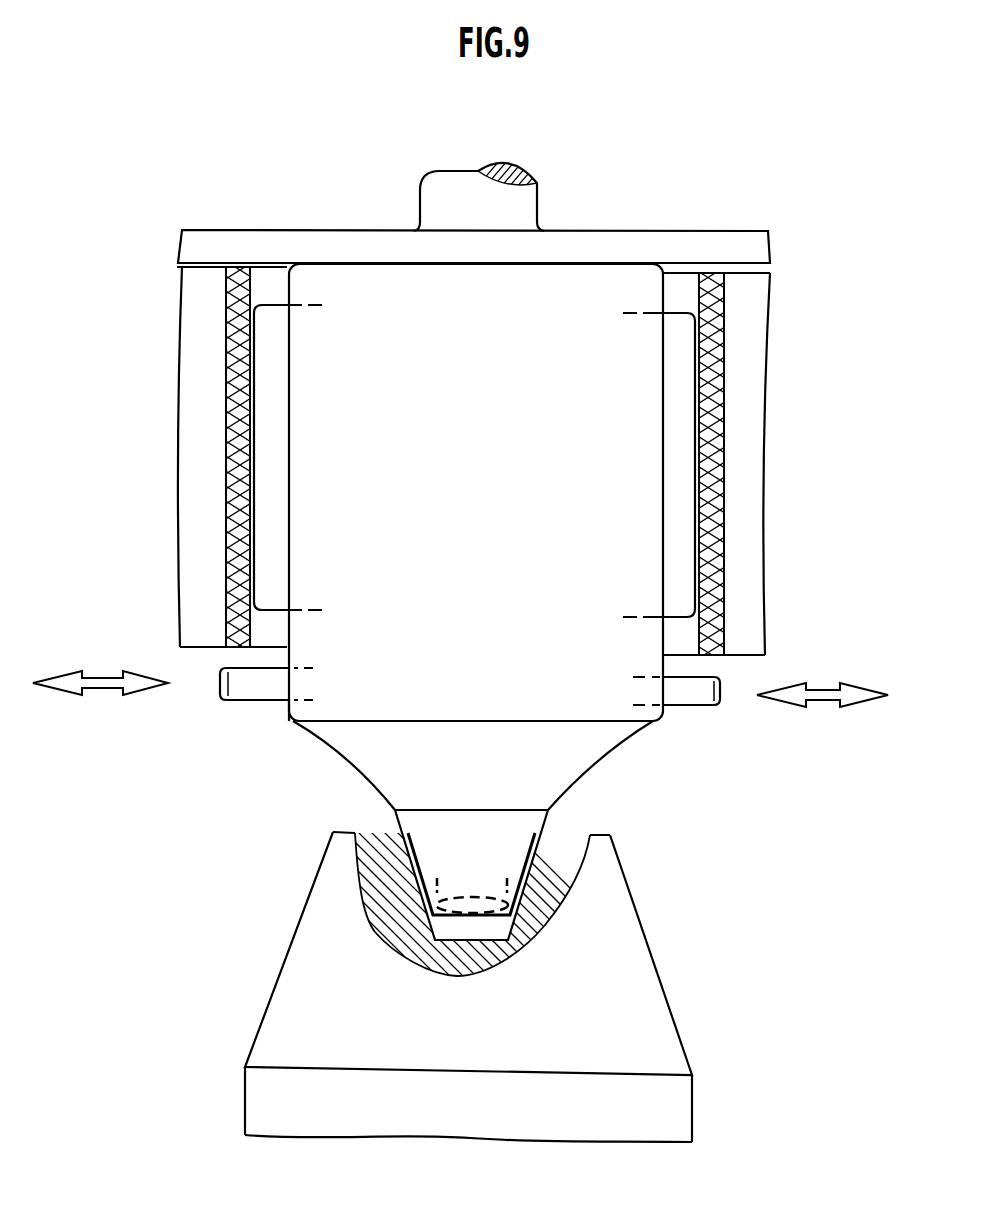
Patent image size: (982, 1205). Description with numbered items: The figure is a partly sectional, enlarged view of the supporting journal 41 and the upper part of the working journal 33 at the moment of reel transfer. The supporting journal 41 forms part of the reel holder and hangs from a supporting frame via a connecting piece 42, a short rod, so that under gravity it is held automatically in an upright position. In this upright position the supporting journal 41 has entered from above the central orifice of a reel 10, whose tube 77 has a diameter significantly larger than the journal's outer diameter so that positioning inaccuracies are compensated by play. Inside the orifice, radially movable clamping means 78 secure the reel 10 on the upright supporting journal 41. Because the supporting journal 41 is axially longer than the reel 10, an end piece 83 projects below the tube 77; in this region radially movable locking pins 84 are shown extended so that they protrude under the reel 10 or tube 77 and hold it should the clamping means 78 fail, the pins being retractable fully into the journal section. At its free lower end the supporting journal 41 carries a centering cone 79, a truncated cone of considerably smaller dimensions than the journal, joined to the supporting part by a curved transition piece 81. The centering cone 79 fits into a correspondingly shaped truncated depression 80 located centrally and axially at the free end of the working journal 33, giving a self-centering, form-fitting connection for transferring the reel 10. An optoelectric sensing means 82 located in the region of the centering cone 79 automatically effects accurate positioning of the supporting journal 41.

The reel 10 is at (178, 486).
The working journal 33 is at (690, 1038).
The supporting journal 41 is at (592, 297).
The connecting piece 42 is at (510, 212).
The tube 77 is at (727, 373).
The clamping means 78 is at (270, 325).
The centering cone 79 is at (523, 827).
The truncated depression 80 is at (513, 922).
The curved transition piece 81 is at (585, 768).
The optoelectric sensing means 82 is at (467, 900).
The end piece 83 is at (283, 713).
The locking pins 84 is at (220, 683).